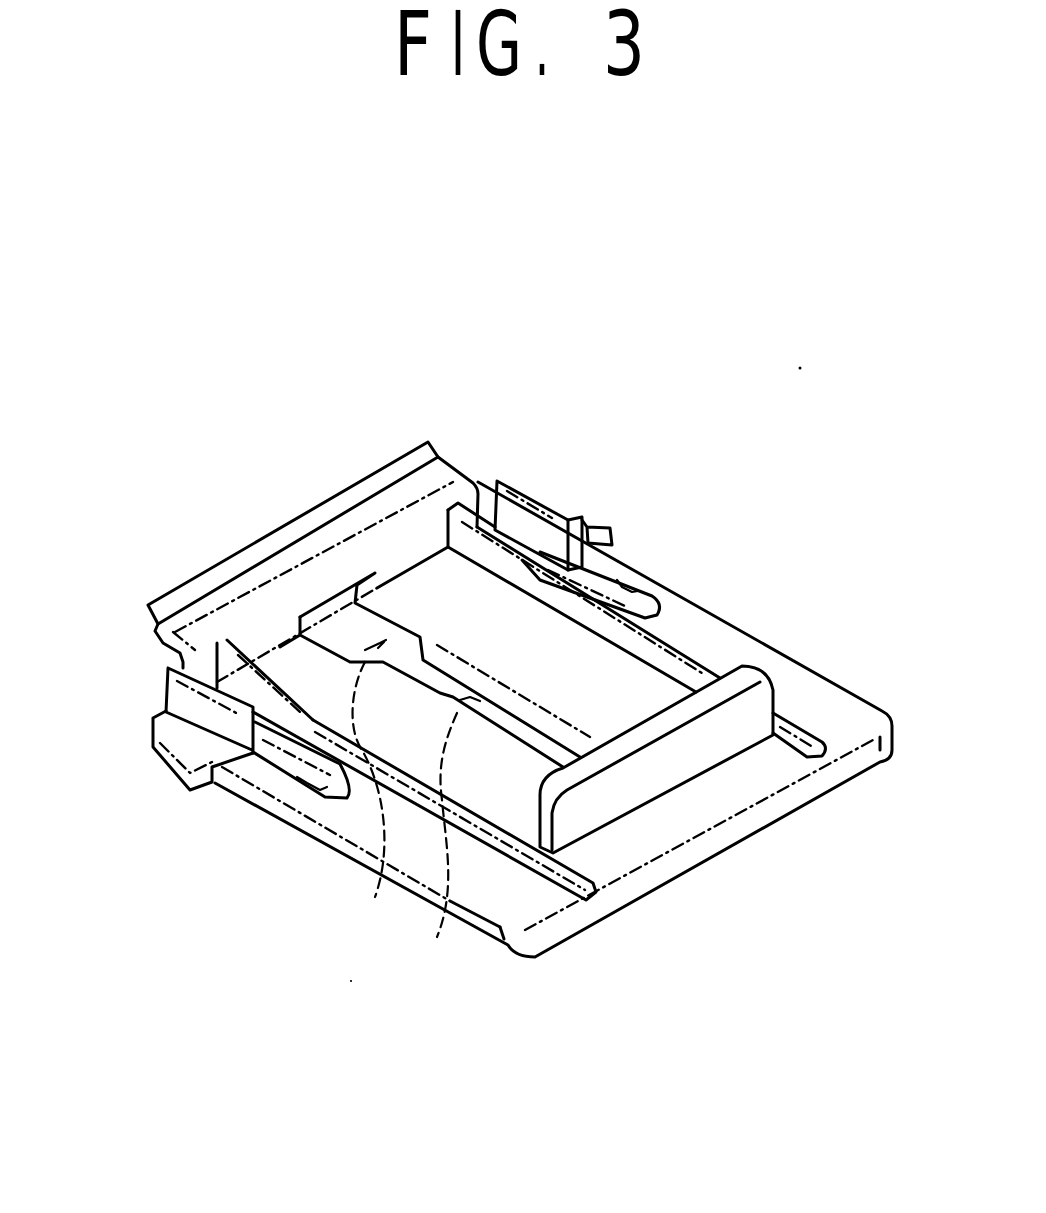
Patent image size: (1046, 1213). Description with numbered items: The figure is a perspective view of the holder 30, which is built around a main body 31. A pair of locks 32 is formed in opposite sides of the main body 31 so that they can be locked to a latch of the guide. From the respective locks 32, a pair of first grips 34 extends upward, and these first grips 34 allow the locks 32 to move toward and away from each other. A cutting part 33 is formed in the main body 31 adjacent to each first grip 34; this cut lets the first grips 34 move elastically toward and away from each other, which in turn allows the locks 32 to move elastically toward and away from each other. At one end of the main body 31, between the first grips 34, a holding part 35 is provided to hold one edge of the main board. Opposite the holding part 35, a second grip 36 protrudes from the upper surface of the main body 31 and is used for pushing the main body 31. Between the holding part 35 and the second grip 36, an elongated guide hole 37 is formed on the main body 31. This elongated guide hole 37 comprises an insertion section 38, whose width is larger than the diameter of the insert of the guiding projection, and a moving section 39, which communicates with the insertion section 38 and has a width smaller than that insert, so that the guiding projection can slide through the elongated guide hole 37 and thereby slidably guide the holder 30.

The holder 30 is at (808, 346).
The main body 31 is at (835, 697).
The locks 32 is at (595, 520).
The cutting part 33 is at (662, 567).
The first grips 34 is at (532, 483).
The holding part 35 is at (323, 493).
The second grip 36 is at (667, 773).
The elongated guide hole 37 is at (398, 975).
The insertion section 38 is at (358, 801).
The moving section 39 is at (431, 848).